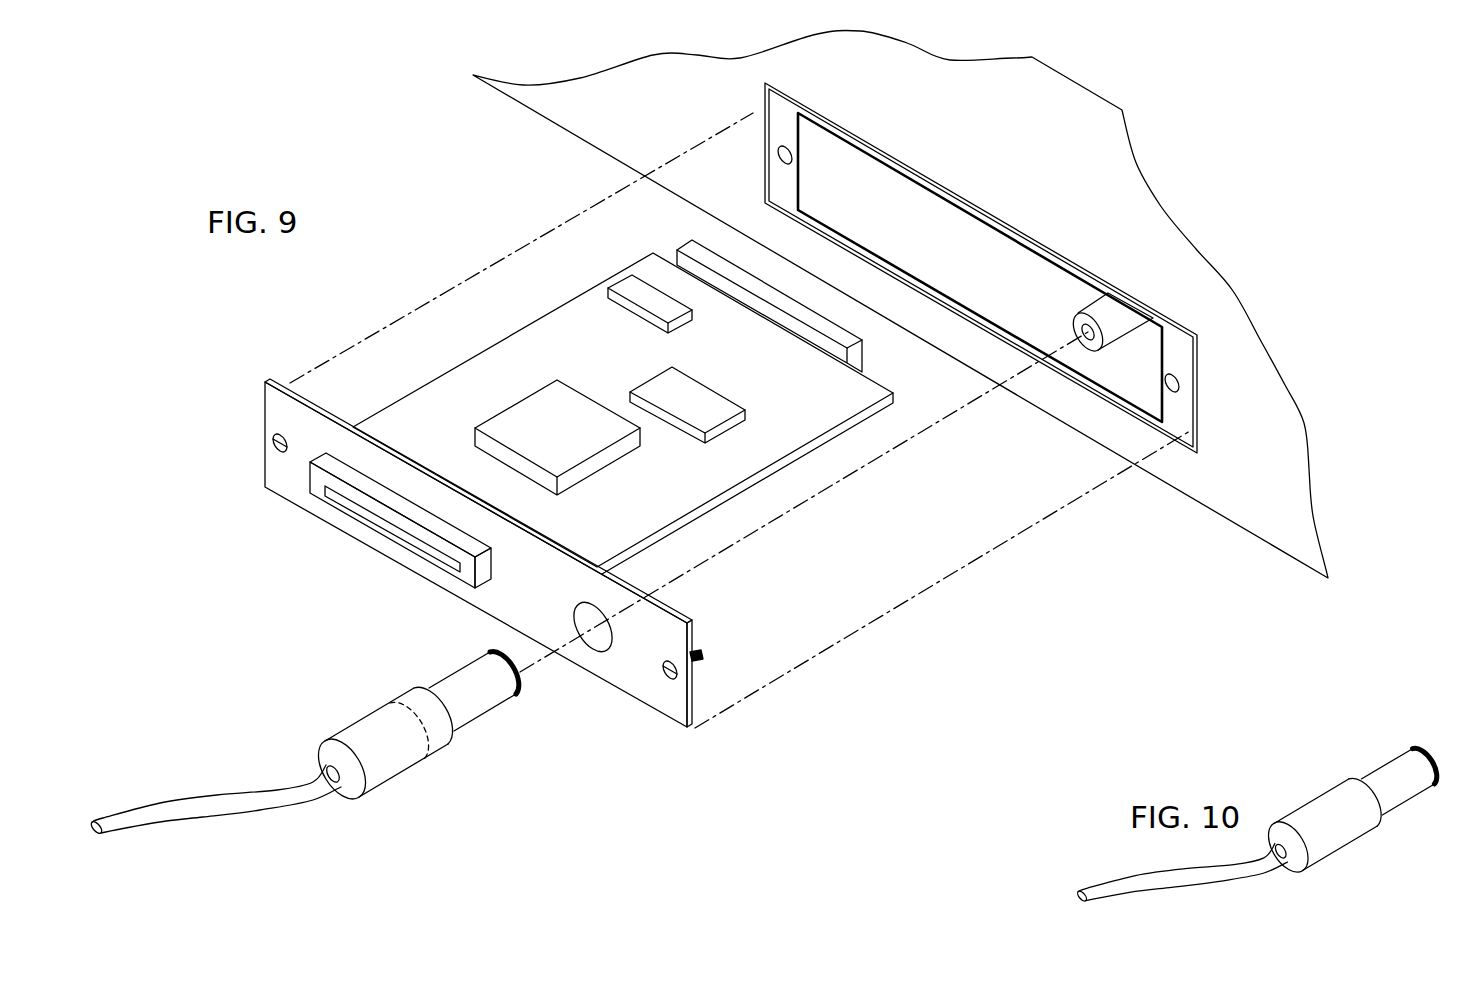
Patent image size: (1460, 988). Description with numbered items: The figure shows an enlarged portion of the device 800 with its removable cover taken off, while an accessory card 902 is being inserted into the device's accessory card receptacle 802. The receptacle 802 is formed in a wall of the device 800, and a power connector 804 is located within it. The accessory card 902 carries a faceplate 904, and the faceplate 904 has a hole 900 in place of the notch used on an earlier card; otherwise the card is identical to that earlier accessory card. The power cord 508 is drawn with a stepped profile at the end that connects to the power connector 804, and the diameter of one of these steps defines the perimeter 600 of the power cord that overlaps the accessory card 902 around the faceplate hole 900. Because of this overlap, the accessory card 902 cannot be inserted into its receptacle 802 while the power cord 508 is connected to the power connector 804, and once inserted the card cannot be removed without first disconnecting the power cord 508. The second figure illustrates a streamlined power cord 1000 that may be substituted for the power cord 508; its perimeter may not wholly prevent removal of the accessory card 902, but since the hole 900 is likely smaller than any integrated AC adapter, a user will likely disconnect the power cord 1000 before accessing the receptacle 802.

In FIG. 9, the device 800 is at (473, 75).
In FIG. 9, the accessory card receptacle 802 is at (955, 272).
In FIG. 9, the power connector 804 is at (1080, 313).
In FIG. 9, the hole 900 is at (614, 616).
In FIG. 9, the accessory card 902 is at (607, 686).
In FIG. 9, the faceplate 904 is at (397, 566).
In FIG. 9, the perimeter 600 is at (394, 706).
In FIG. 9, the power cord 508 is at (300, 804).
In FIG. 10, the streamlined power cord 1000 is at (1368, 834).